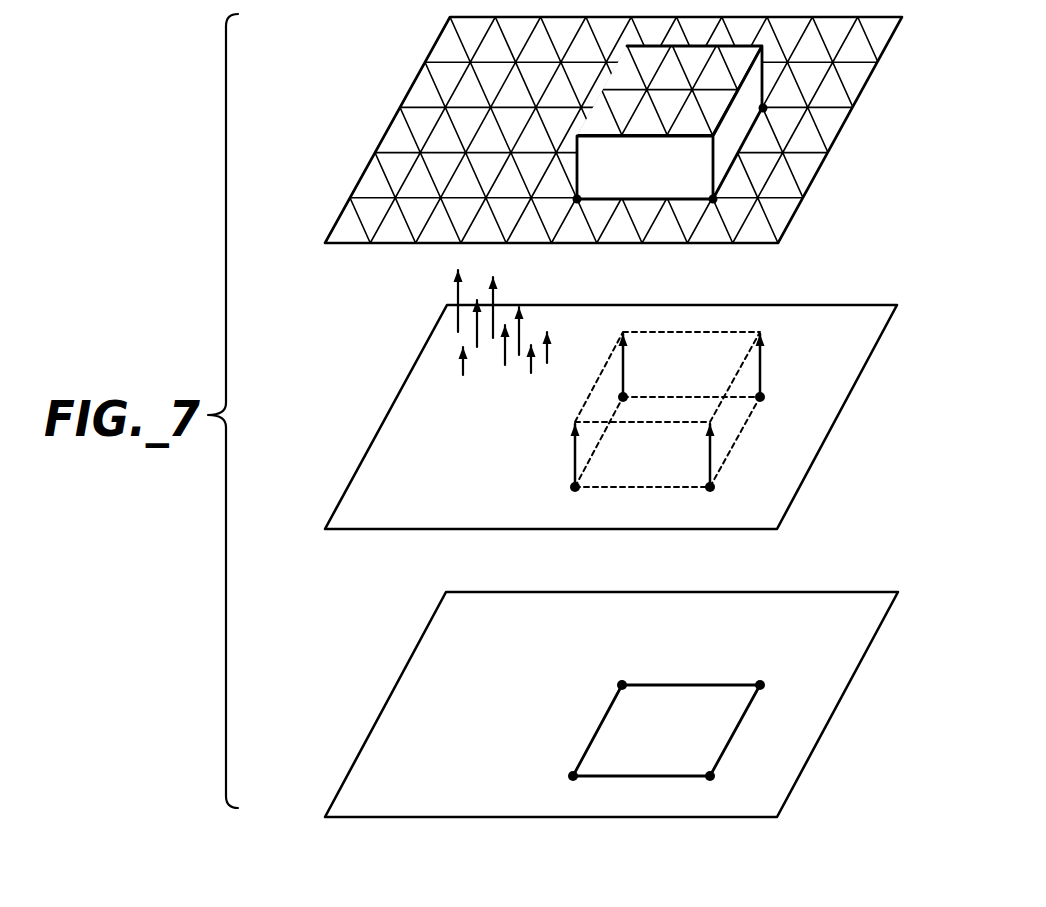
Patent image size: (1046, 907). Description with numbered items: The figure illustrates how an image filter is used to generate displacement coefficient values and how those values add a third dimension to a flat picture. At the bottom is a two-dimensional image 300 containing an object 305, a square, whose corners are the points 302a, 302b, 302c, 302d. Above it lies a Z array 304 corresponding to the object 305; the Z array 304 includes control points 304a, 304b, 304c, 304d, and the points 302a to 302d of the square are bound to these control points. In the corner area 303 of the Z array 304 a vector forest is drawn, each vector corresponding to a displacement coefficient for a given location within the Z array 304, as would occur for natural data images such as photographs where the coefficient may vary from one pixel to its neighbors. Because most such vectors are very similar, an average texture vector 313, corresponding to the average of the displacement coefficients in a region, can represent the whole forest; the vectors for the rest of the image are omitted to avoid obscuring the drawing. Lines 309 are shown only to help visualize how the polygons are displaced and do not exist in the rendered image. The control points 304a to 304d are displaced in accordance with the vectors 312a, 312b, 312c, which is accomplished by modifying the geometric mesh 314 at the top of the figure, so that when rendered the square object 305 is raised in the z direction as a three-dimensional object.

The 2D image 300 is at (352, 733).
The point 302a is at (620, 688).
The point 302b is at (762, 688).
The point 302c is at (571, 780).
The point 302d is at (710, 780).
The object 305 is at (737, 733).
The corner area 303 is at (432, 322).
The Z array 304 is at (354, 457).
The control point 304a is at (620, 399).
The control point 304b is at (763, 400).
The control point 304c is at (573, 490).
The control point 304d is at (712, 490).
The lines 309 is at (550, 321).
The vector 312a is at (627, 357).
The vector 312b is at (762, 363).
The vector 312c is at (573, 458).
The average texture vector 313 is at (481, 321).
The geometric mesh 314 is at (350, 183).